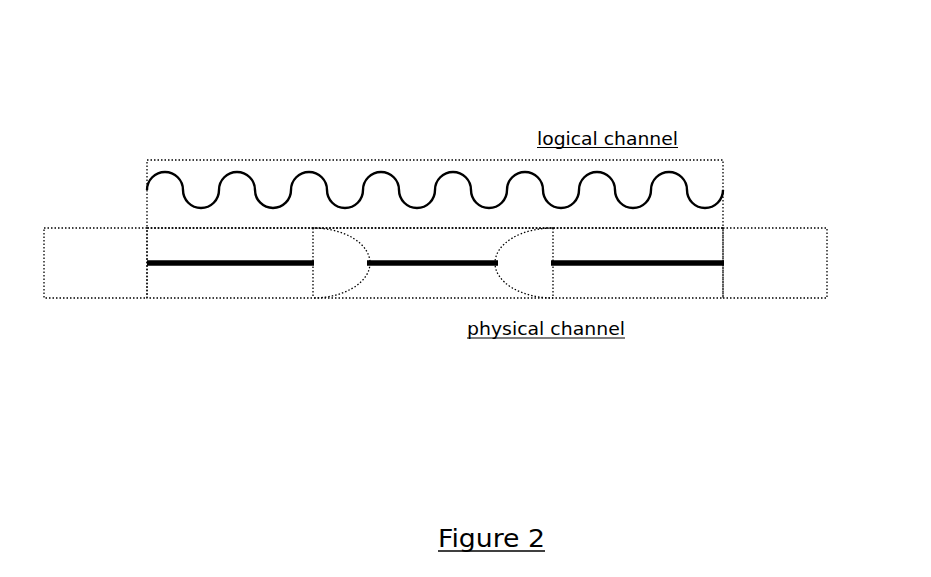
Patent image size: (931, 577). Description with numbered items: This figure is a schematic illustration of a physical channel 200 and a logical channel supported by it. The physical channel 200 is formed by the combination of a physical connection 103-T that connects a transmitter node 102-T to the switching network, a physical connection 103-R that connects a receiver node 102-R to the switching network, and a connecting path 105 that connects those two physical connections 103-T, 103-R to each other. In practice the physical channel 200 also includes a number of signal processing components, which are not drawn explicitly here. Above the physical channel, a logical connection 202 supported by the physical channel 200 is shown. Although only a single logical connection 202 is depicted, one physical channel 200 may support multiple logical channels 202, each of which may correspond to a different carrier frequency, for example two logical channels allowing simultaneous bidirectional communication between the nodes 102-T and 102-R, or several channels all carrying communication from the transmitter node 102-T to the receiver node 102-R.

The logical connection 202 is at (468, 160).
The physical channel 200 is at (441, 298).
The transmitter node 102-T is at (122, 274).
The receiver node 102-R is at (803, 274).
The physical connection 103-T is at (208, 265).
The connecting path 105 is at (397, 265).
The physical connection 103-R is at (685, 265).